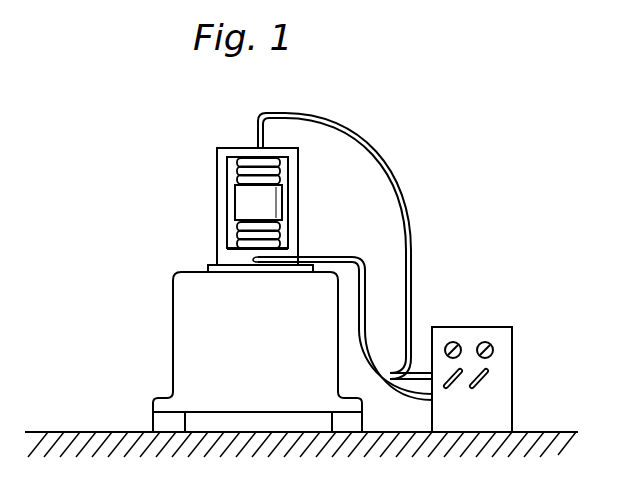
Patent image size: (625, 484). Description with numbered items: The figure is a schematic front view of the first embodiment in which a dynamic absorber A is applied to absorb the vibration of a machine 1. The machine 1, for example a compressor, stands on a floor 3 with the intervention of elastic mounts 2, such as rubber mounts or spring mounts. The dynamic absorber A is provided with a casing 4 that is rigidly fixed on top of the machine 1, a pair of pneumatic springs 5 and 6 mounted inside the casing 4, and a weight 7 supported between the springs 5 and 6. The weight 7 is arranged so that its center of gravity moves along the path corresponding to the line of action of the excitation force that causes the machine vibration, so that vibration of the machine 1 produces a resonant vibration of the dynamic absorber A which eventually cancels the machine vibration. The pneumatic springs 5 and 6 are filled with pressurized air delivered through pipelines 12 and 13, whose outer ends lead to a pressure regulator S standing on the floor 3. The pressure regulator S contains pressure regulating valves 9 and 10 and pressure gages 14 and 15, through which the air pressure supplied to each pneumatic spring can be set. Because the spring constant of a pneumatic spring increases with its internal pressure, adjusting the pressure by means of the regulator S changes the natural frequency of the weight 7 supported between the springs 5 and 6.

The machine 1 is at (183, 328).
The elastic mounts 2 is at (163, 420).
The floor 3 is at (58, 432).
The casing 4 is at (298, 216).
The pneumatic spring 5 is at (257, 168).
The pneumatic spring 6 is at (240, 233).
The weight 7 is at (247, 200).
The pressure regulating valve 9 is at (462, 387).
The pressure regulating valve 10 is at (489, 374).
The pipeline 12 is at (352, 258).
The pipeline 13 is at (388, 174).
The pressure gage 14 is at (453, 342).
The pressure gage 15 is at (491, 342).
The dynamic absorber A is at (218, 163).
The pressure regulator S is at (513, 328).